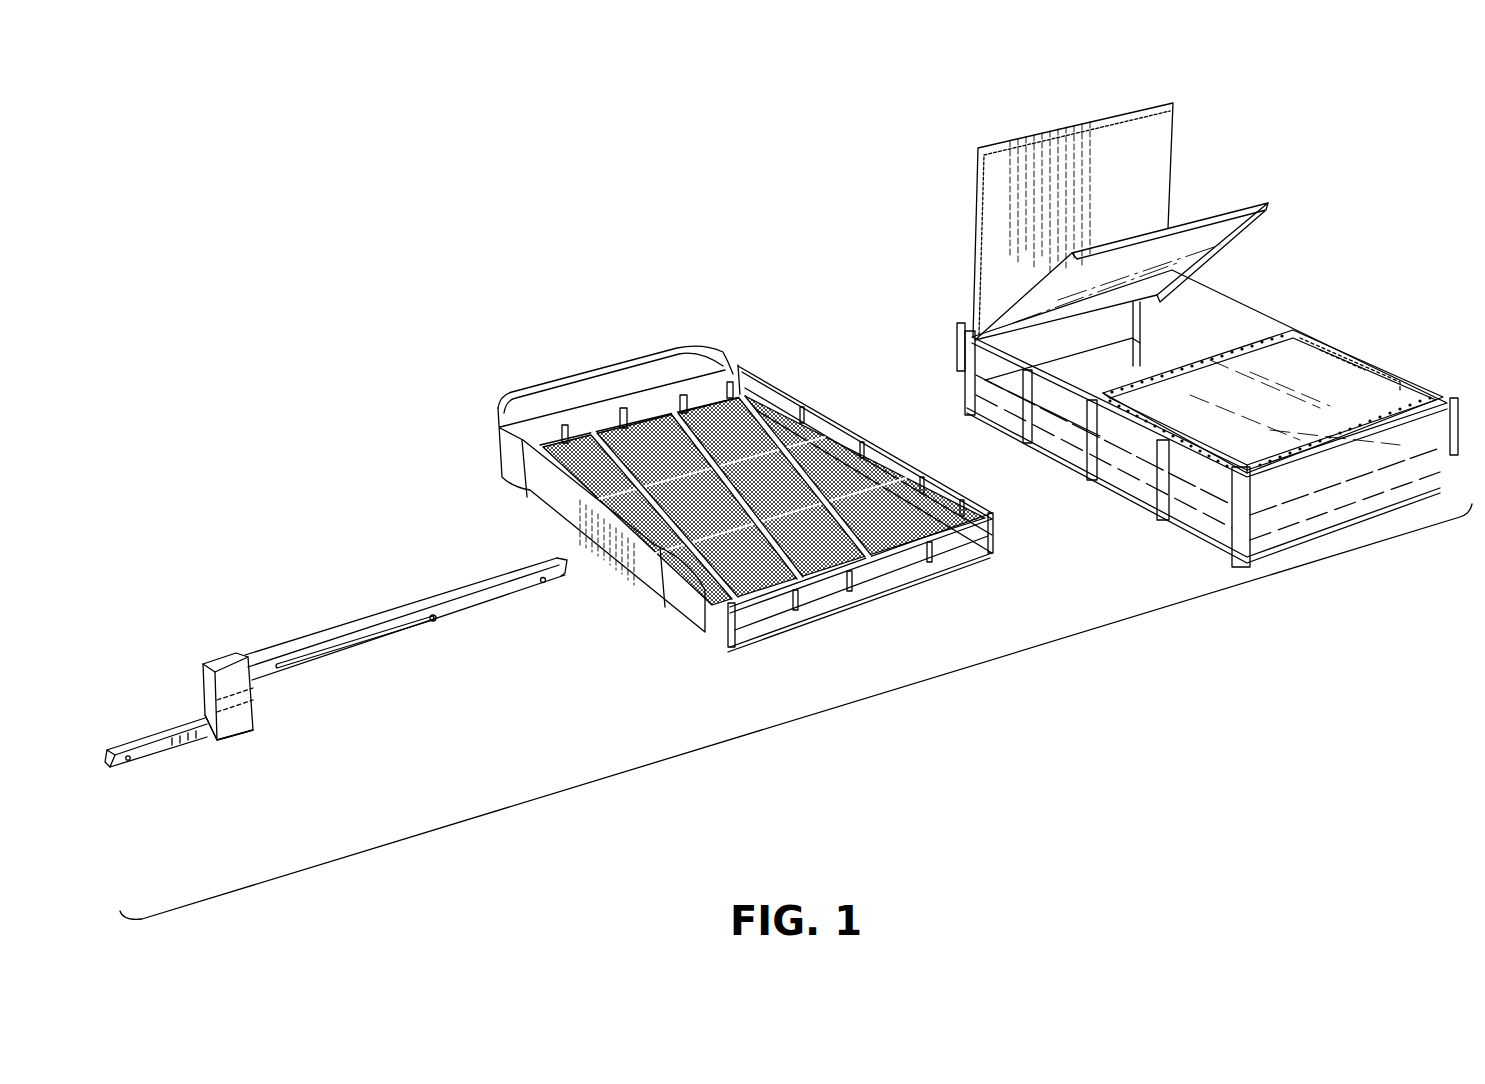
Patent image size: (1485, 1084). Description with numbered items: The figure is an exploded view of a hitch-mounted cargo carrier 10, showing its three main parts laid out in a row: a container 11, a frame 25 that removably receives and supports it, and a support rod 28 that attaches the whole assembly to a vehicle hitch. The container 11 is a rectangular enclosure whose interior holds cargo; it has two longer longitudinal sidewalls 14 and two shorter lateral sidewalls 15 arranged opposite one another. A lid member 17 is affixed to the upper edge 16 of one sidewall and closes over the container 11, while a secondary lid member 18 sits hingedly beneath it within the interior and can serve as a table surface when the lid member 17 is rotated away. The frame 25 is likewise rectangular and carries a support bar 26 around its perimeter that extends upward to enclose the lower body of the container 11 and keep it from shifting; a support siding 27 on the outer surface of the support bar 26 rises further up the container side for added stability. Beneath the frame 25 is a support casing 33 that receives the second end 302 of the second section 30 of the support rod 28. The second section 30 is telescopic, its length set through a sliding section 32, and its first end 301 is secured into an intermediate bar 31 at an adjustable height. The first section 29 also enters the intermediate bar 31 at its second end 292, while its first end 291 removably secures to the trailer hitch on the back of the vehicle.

The hitch-mounted cargo carrier 10 is at (801, 720).
The container 11 is at (1263, 311).
The longitudinal sidewalls 14 is at (1207, 533).
The lateral sidewalls 15 is at (1367, 505).
The upper edge 16 is at (962, 348).
The lid member 17 is at (1089, 153).
The secondary lid member 18 is at (1253, 203).
The frame 25 is at (720, 410).
The support bar 26 is at (820, 580).
The support siding 27 is at (690, 612).
The support rod 28 is at (290, 640).
The first section 29 is at (170, 727).
The second section 30 is at (429, 597).
The intermediate bar 31 is at (205, 687).
The sliding section 32 is at (437, 622).
The support casing 33 is at (823, 457).
The first end of the first section 291 is at (112, 770).
The second end of the first section 292 is at (218, 742).
The first end of the second section 301 is at (247, 655).
The second end of the second section 302 is at (567, 567).